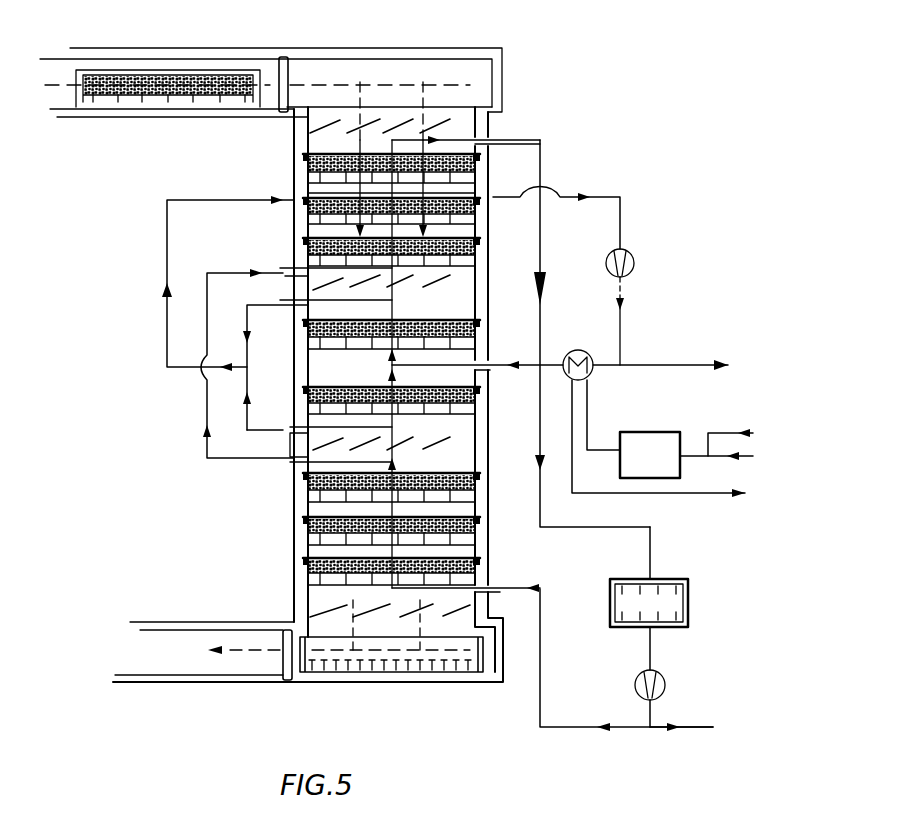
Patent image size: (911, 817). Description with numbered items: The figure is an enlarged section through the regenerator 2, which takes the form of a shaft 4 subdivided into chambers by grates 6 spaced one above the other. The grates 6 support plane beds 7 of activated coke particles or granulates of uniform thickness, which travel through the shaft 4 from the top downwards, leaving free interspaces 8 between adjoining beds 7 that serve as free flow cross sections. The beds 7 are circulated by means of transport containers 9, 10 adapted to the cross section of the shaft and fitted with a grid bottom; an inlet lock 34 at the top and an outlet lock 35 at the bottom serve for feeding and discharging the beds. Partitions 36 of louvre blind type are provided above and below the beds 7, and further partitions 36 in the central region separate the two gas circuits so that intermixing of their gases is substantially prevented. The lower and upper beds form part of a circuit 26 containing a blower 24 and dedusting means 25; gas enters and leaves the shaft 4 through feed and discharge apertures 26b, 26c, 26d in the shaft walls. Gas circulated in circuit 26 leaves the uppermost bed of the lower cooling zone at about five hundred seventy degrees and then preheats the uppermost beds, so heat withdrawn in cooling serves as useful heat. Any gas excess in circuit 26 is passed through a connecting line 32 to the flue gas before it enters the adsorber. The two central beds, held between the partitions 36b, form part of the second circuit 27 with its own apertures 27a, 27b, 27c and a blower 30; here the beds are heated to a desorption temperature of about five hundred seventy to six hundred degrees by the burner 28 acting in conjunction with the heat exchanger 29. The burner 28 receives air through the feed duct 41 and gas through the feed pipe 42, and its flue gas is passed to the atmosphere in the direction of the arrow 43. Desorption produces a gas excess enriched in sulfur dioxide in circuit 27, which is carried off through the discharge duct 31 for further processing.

The regenerator 2 is at (285, 510).
The shaft 4 is at (294, 150).
The grates 6 is at (478, 218).
The beds 7 is at (478, 158).
The free interspaces 8 is at (478, 244).
The transport container 9 is at (187, 72).
The transport container 10 is at (384, 660).
The blower 24 is at (657, 690).
The dedusting means 25 is at (678, 609).
The circuit 26 is at (248, 460).
The feed and discharge aperture 26b is at (294, 460).
The feed and discharge aperture 26c is at (291, 268).
The feed and discharge aperture 26d is at (495, 143).
The second circuit 27 is at (165, 248).
The feed and discharge aperture 27a is at (285, 430).
The feed and discharge aperture 27b is at (283, 308).
The feed and discharge aperture 27c is at (541, 360).
The burner 28 is at (652, 434).
The heat exchanger 29 is at (592, 372).
The blower 30 is at (634, 265).
The discharge duct 31 is at (638, 362).
The connecting line 32 is at (683, 740).
The inlet lock 34 is at (492, 70).
The outlet lock 35 is at (492, 660).
The partitions 36 is at (387, 120).
The partitions 36b is at (440, 285).
The feed duct 41 is at (726, 433).
The feed pipe 42 is at (741, 460).
The arrow 43 is at (723, 502).